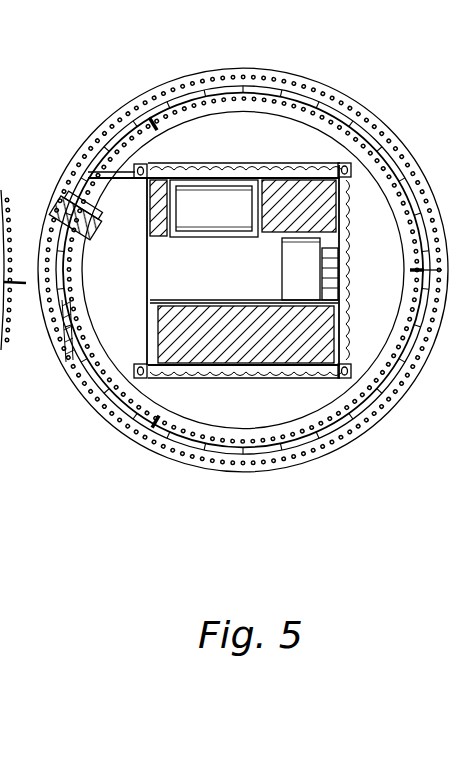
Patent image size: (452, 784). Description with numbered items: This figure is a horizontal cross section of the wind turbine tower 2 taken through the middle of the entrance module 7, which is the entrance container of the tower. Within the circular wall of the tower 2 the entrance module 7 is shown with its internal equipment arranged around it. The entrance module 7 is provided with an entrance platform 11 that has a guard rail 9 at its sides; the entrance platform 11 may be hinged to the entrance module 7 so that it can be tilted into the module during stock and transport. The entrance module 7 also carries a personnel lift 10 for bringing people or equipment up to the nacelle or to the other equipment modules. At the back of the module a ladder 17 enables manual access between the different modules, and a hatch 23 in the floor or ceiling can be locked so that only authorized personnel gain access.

The tower 2 is at (125, 127).
The entrance module 7 is at (282, 378).
The guard rail 9 is at (96, 146).
The personnel lift 10 is at (204, 196).
The entrance platform 11 is at (76, 258).
The ladder 17 is at (350, 222).
The hatch 23 is at (295, 250).